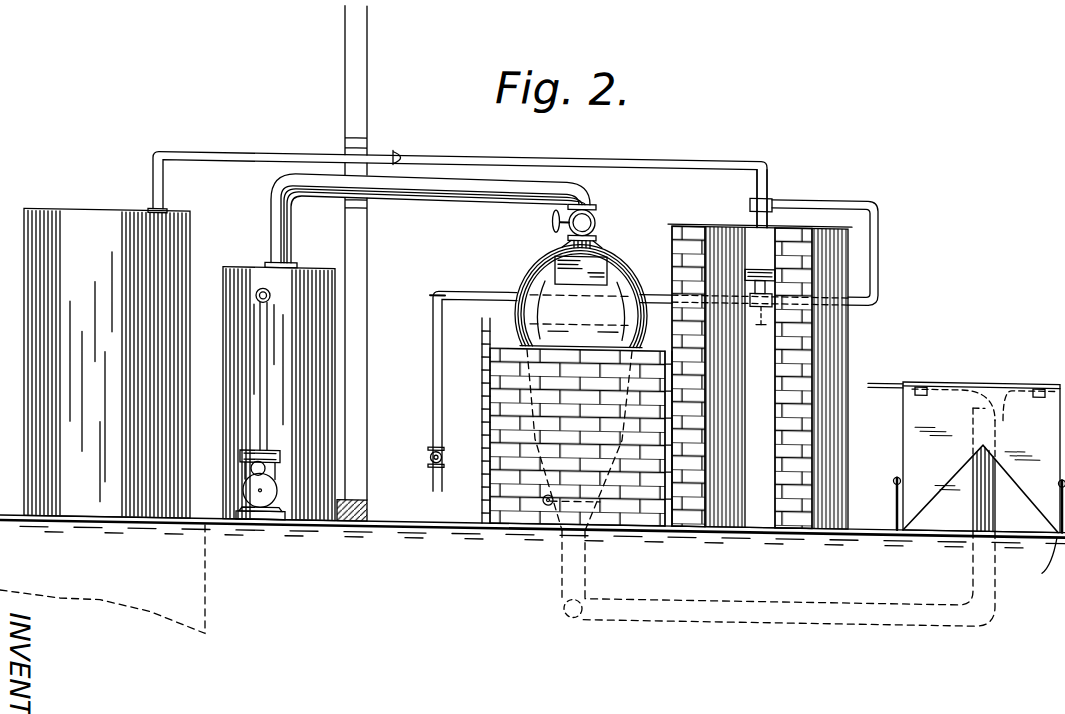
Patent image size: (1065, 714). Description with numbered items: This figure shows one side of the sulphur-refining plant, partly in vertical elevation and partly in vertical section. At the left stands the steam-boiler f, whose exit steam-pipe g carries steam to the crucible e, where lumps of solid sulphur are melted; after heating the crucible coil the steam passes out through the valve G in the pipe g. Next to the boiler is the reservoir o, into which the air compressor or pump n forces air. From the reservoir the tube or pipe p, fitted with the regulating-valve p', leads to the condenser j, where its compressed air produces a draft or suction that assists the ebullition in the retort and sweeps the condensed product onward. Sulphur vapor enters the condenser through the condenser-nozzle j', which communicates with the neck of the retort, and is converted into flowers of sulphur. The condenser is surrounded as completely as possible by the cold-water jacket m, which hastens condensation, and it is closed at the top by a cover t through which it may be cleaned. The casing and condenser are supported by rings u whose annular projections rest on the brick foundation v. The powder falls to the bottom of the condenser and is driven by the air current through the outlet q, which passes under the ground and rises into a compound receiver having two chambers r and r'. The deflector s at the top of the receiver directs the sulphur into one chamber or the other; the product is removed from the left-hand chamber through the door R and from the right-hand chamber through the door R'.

The steam-boiler f is at (107, 363).
The reservoir o is at (279, 391).
The air compressor or pump n is at (278, 467).
The tube or pipe p is at (430, 220).
The regulating-valve p' is at (559, 226).
The exit steam-pipe g is at (513, 311).
The valve G is at (420, 458).
The cold-water jacket m is at (581, 296).
The cover t is at (581, 270).
The rings u is at (578, 334).
The brick foundation v is at (481, 411).
The condenser j is at (579, 441).
The condenser-nozzle j' is at (557, 574).
The crucible e is at (760, 348).
The deflector s is at (964, 456).
The chamber r is at (907, 499).
The chamber r' is at (1042, 501).
The outlet q is at (974, 481).
The door R is at (532, 569).
The door R' is at (1042, 562).